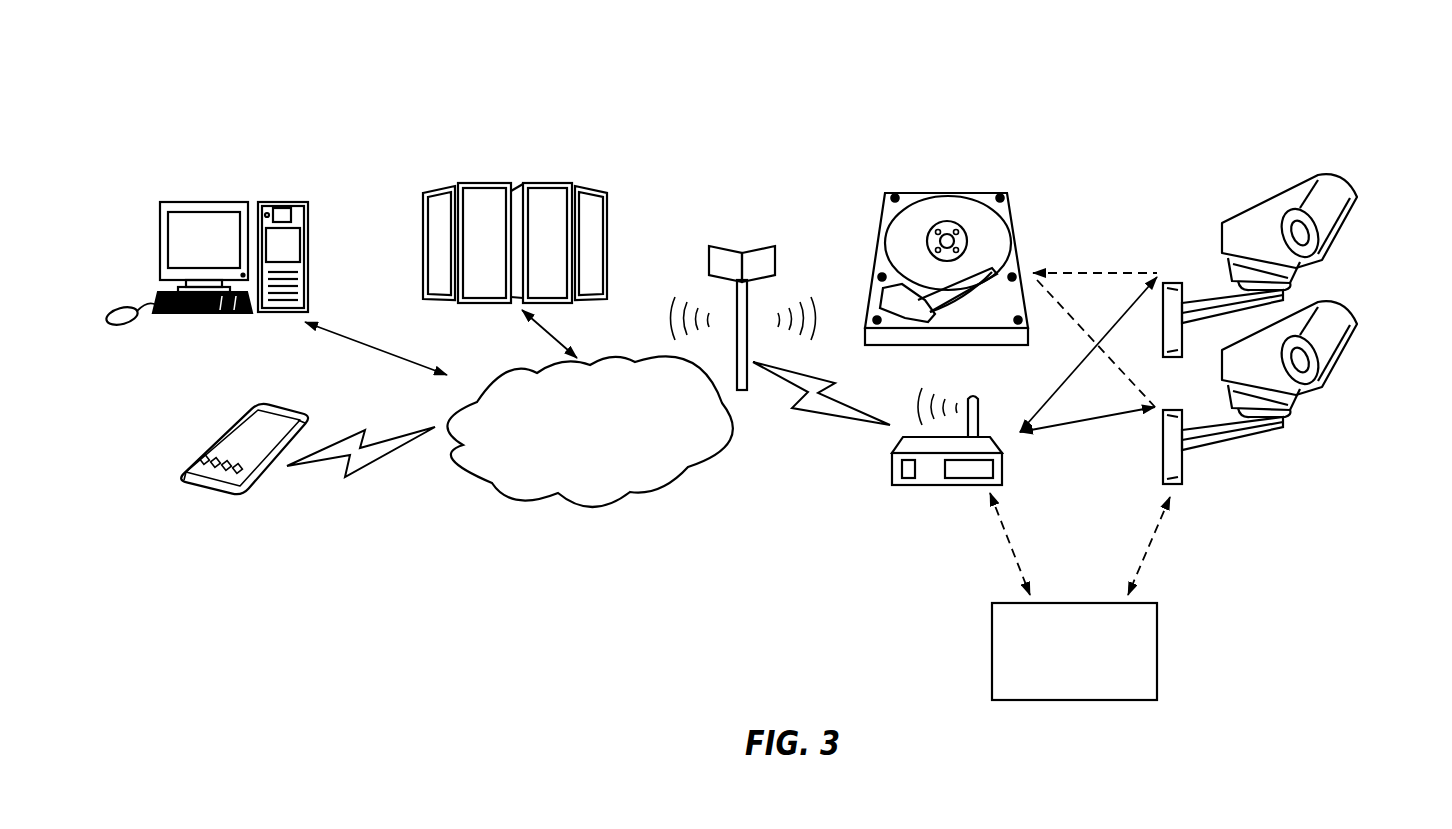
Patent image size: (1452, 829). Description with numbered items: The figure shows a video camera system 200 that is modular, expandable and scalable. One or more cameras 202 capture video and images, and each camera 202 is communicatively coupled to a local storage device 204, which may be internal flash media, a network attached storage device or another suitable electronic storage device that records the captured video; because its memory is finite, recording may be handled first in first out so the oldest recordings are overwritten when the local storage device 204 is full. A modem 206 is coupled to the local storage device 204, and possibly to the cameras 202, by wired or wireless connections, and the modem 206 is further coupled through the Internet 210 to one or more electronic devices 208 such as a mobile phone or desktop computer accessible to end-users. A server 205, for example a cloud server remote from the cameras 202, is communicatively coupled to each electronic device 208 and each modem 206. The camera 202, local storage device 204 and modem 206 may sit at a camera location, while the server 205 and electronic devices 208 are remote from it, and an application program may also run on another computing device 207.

The system 200 is at (1132, 136).
The camera 202 is at (1355, 218).
The local storage device 204 is at (1012, 223).
The server 205 is at (610, 228).
The modem 206 is at (892, 473).
The computing device 207 is at (1157, 642).
The electronic device 208 is at (158, 238).
The Internet 210 is at (623, 500).